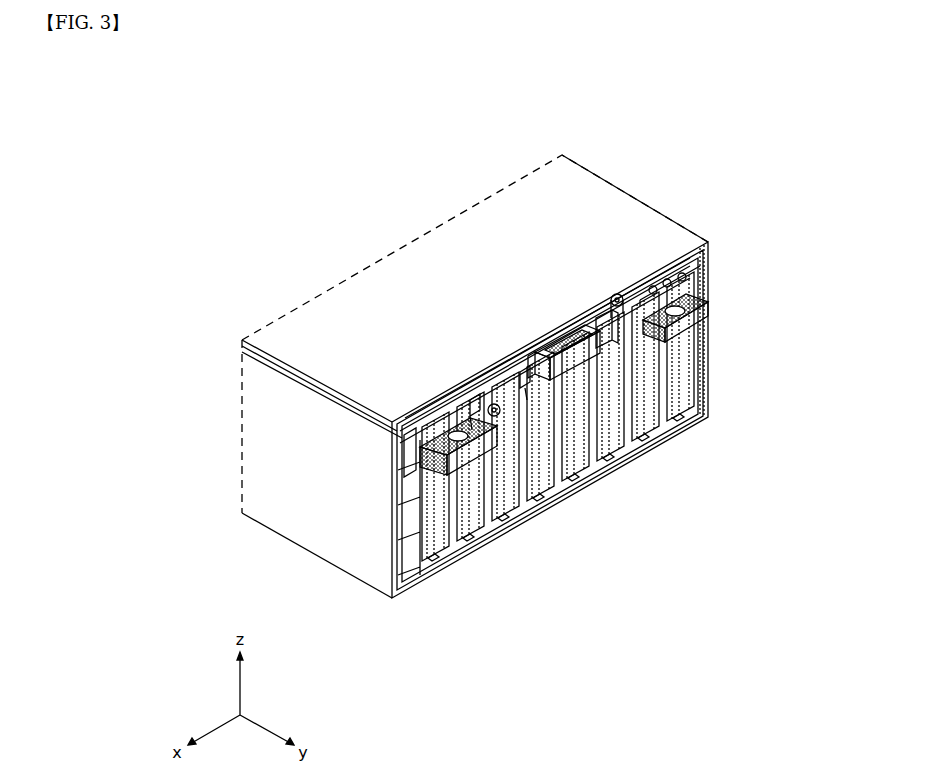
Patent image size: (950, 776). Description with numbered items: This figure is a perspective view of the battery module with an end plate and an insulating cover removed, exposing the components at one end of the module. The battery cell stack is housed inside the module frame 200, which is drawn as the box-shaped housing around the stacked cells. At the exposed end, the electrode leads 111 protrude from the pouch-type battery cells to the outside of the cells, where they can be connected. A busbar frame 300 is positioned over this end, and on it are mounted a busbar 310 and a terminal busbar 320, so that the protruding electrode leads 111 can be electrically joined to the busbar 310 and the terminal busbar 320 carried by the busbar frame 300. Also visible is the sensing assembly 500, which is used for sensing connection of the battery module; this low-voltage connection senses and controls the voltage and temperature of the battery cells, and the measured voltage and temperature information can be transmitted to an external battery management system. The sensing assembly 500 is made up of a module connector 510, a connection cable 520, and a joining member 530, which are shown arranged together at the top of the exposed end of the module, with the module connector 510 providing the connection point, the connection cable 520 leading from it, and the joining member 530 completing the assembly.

The electrode lead 111 is at (668, 395).
The module frame 200 is at (661, 227).
The busbar frame 300 is at (423, 573).
The busbar 310 is at (643, 447).
The terminal busbar 320 is at (708, 307).
The sensing assembly 500 is at (547, 214).
The module connector 510 is at (565, 345).
The connection cable 520 is at (603, 340).
The joining member 530 is at (632, 330).